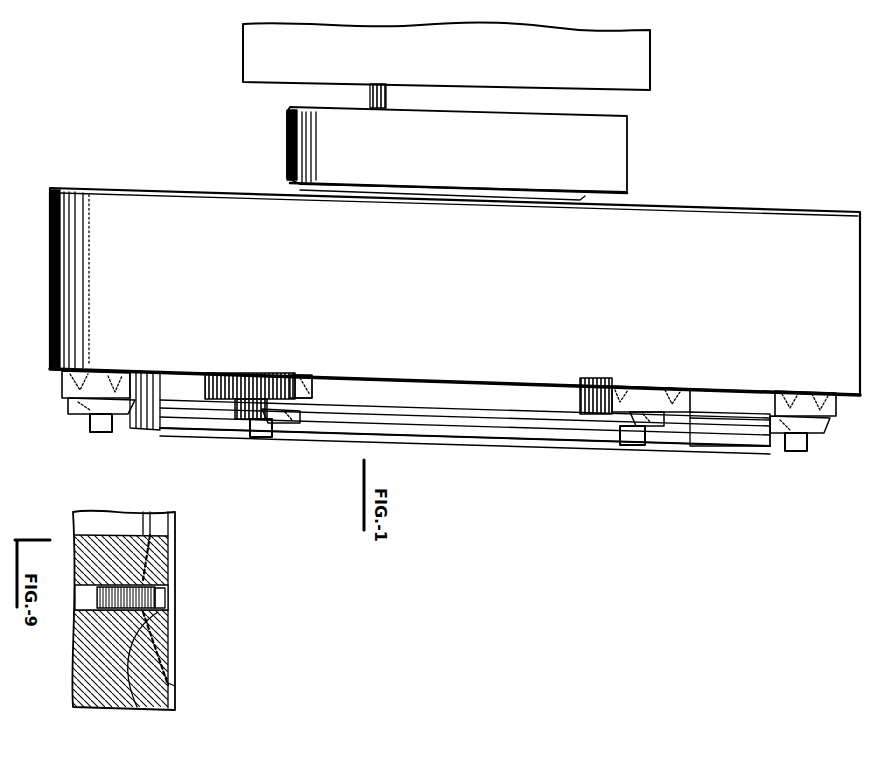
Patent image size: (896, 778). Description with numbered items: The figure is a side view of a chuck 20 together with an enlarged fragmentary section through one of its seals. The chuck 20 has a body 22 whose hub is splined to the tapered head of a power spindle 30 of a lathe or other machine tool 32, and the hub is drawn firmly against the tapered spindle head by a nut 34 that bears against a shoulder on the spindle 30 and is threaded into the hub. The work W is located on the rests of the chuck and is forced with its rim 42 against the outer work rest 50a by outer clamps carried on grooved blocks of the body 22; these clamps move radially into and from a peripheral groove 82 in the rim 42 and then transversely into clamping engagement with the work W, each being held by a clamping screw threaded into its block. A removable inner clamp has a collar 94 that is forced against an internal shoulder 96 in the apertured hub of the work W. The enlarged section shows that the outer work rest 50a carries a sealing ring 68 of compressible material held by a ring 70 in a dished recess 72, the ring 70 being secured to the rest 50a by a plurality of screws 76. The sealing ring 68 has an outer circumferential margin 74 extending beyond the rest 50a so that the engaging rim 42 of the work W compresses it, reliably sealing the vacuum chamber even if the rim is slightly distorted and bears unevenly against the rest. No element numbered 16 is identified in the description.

In FIG. 1, the chuck 20 is at (857, 411).
In FIG. 1, the body 22 is at (848, 303).
In FIG. 1, the power spindle 30 is at (545, 96).
In FIG. 1, the machine tool 32 is at (650, 91).
In FIG. 1, the nut 34 is at (622, 156).
In FIG. 1, the rim 42 is at (157, 424).
In FIG. 1, the outer work rest 50a is at (737, 403).
In FIG. 9, the outer work rest 50a is at (160, 697).
In FIG. 1, the peripheral groove 82 is at (543, 428).
In FIG. 1, the work W is at (687, 441).
In FIG. 1, the frame member 16 is at (7, 36).
In FIG. 1, the internal shoulder 96 is at (5, 105).
In FIG. 1, the collar 94 is at (7, 158).
In FIG. 9, the ring 70 is at (165, 560).
In FIG. 9, the screws 76 is at (160, 596).
In FIG. 9, the sealing ring 68 is at (168, 650).
In FIG. 9, the outer circumferential margin 74 is at (170, 683).
In FIG. 9, the dished recess 72 is at (137, 707).